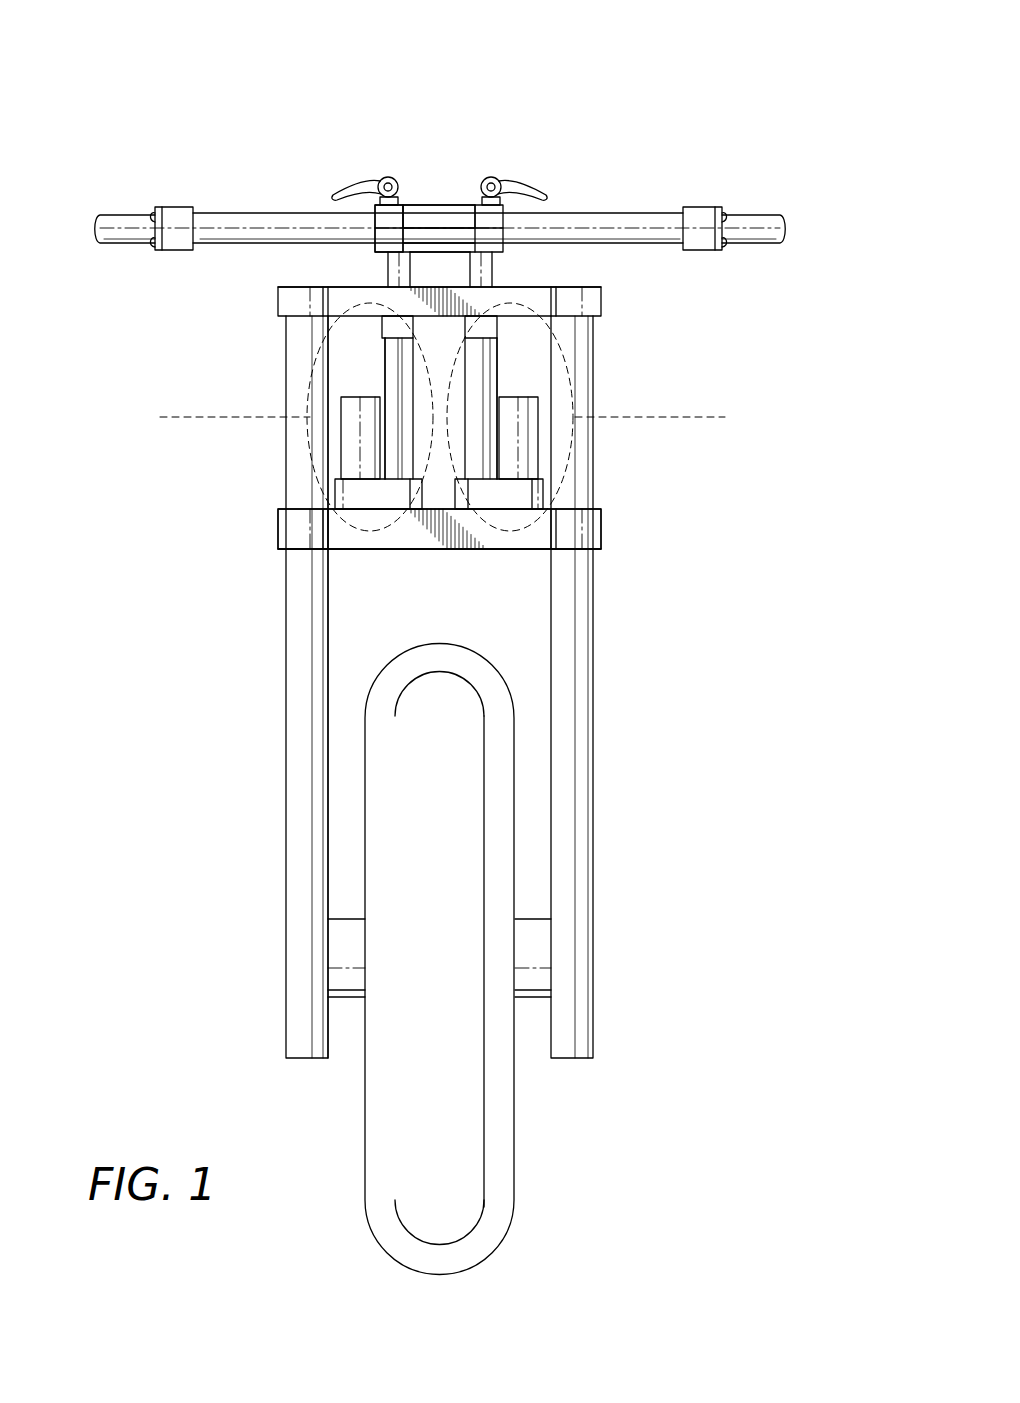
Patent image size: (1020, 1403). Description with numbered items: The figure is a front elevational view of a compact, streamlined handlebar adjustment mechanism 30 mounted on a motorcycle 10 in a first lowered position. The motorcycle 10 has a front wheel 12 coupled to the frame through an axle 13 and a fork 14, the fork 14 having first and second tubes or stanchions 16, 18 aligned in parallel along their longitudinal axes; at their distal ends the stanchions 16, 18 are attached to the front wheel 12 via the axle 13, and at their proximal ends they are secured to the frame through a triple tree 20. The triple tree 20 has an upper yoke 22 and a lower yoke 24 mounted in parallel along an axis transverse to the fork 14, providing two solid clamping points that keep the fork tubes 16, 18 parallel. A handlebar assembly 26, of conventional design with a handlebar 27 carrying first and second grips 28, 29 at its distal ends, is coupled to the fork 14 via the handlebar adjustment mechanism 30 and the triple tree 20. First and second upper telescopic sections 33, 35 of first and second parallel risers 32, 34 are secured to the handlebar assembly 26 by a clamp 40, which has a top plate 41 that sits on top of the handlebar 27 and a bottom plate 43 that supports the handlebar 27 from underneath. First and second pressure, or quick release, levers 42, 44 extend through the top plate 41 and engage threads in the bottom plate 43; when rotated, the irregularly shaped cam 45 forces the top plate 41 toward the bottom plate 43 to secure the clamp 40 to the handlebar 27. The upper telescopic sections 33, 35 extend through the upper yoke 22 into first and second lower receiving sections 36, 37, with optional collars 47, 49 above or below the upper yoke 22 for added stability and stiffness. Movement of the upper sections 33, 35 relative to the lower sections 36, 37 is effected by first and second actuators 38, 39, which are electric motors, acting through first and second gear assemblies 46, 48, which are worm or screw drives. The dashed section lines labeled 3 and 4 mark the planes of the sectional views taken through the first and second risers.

The motorcycle 10 is at (598, 160).
The front wheel 12 is at (495, 822).
The axle 13 is at (530, 945).
The fork 14 is at (582, 600).
The first tube or stanchion 16 is at (296, 345).
The second tube or stanchion 18 is at (585, 346).
The triple tree 20 is at (606, 530).
The upper yoke 22 is at (290, 300).
The lower yoke 24 is at (290, 537).
The handlebar assembly 26 is at (651, 208).
The handlebar 27 is at (265, 213).
The first grip 28 is at (145, 212).
The second grip 29 is at (755, 218).
The handlebar adjustment mechanism 30 is at (527, 328).
The first riser 32 is at (383, 378).
The first upper telescopic section 33 is at (387, 270).
The second riser 34 is at (499, 378).
The second upper telescopic section 35 is at (495, 270).
The first lower receiving section 36 is at (385, 386).
The second lower receiving section 37 is at (497, 390).
The first actuator 38 is at (355, 448).
The second actuator 39 is at (527, 448).
The clamp 40 is at (445, 203).
The top plate 41 is at (460, 203).
The first pressure lever 42 is at (381, 178).
The bottom plate 43 is at (468, 250).
The second pressure lever 44 is at (494, 176).
The cam 45 is at (405, 185).
The first gear assembly 46 is at (363, 498).
The first collar 47 is at (398, 325).
The second gear assembly 48 is at (515, 498).
The second collar 49 is at (490, 330).
The section line 3 is at (165, 417).
The section line 4 is at (722, 417).